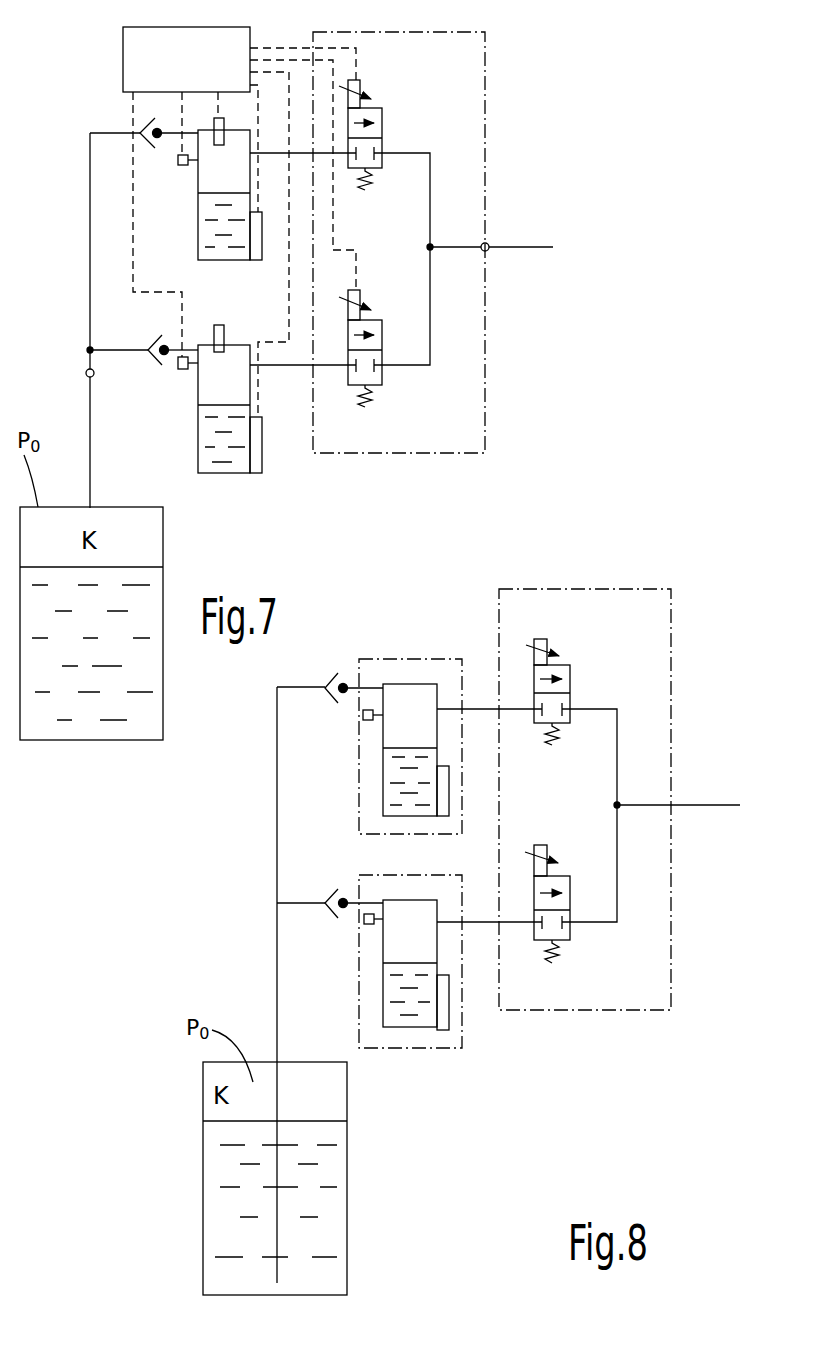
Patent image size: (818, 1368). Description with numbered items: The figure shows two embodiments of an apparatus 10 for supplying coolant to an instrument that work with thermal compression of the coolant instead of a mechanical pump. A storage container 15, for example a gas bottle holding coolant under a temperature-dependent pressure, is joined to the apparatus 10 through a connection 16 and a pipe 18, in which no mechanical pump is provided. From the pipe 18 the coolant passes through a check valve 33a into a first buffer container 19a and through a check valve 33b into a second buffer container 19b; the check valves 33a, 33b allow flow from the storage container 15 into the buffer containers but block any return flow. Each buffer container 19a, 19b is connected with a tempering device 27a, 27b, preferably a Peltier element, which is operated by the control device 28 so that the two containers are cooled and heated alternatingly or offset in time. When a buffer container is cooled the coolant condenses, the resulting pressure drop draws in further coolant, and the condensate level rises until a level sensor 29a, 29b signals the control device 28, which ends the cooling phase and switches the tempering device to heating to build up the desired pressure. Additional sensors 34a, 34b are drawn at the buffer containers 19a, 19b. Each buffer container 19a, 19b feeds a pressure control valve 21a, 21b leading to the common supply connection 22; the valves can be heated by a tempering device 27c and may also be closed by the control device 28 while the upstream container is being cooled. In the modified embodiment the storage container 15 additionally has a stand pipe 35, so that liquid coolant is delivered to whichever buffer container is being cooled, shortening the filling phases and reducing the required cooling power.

In FIG. 7, the apparatus 10 is at (561, 108).
In FIG. 8, the apparatus 10 is at (710, 634).
In FIG. 7, the storage container 15 is at (70, 476).
In FIG. 8, the storage container 15 is at (255, 1024).
In FIG. 7, the connection 16 is at (86, 370).
In FIG. 7, the pipe 18 is at (88, 150).
In FIG. 7, the first buffer container 19a is at (218, 262).
In FIG. 8, the first buffer container 19a is at (398, 817).
In FIG. 7, the second buffer container 19b is at (226, 474).
In FIG. 8, the second buffer container 19b is at (410, 1028).
In FIG. 7, the pressure control valve 21a is at (395, 120).
In FIG. 8, the pressure control valve 21a is at (583, 694).
In FIG. 7, the pressure control valve 21b is at (389, 375).
In FIG. 8, the pressure control valve 21b is at (576, 867).
In FIG. 7, the supply connection 22 is at (489, 243).
In FIG. 7, the tempering device 27a is at (260, 240).
In FIG. 8, the tempering device 27a is at (443, 790).
In FIG. 7, the tempering device 27b is at (265, 457).
In FIG. 8, the tempering device 27b is at (443, 1010).
In FIG. 7, the tempering device 27c is at (485, 418).
In FIG. 7, the control device 28 is at (197, 68).
In FIG. 7, the level sensor 29a is at (181, 165).
In FIG. 7, the level sensor 29b is at (182, 369).
In FIG. 7, the check valve 33a is at (156, 160).
In FIG. 7, the check valve 33b is at (147, 365).
In FIG. 7, the first level sensor 34a is at (220, 146).
In FIG. 7, the second level sensor 34b is at (221, 353).
In FIG. 8, the stand pipe 35 is at (280, 1082).